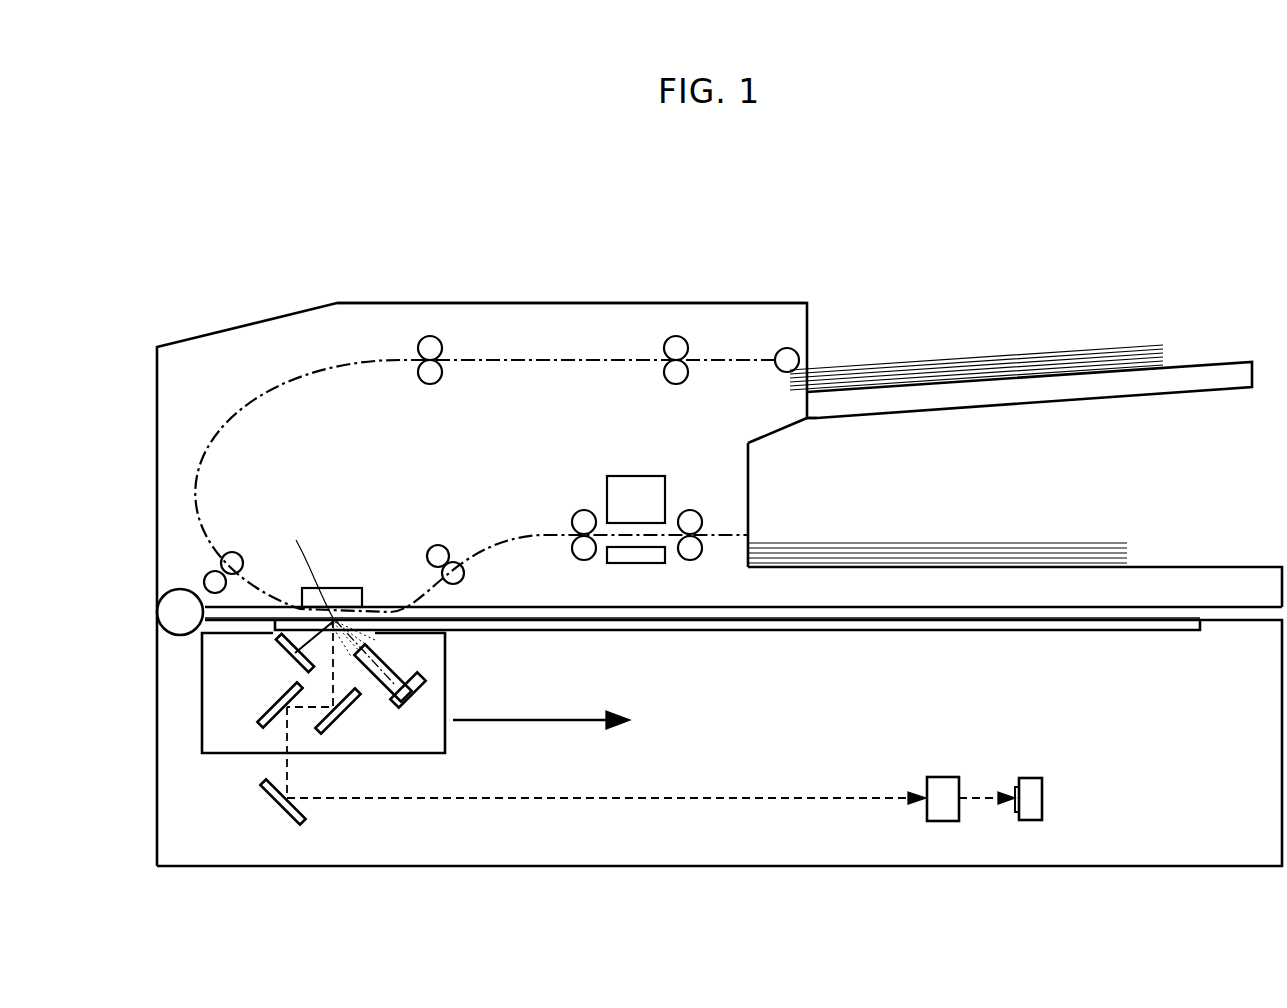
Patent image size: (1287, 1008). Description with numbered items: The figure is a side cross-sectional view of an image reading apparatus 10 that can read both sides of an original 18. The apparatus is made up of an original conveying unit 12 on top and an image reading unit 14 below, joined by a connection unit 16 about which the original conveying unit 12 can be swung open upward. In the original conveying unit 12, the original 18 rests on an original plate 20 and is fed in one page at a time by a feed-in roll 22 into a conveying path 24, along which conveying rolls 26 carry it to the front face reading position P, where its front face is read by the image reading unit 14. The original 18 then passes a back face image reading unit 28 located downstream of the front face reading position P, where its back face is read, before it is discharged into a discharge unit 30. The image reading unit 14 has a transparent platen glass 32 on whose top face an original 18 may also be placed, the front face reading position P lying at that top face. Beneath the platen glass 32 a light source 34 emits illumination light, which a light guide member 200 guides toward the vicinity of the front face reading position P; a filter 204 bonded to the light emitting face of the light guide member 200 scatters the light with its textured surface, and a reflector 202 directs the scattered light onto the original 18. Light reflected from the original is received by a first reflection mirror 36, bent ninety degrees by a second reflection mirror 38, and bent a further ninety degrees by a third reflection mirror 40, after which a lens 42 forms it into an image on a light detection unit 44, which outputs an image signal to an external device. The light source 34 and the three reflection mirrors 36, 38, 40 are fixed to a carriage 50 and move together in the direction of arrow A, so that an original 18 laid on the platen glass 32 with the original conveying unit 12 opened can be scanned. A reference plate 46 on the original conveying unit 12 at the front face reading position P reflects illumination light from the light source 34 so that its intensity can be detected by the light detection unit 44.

The image reading apparatus 10 is at (769, 257).
The original conveying unit 12 is at (468, 302).
The image reading unit 14 is at (156, 685).
The connection unit 16 is at (175, 593).
The original 18 is at (998, 345).
The original plate 20 is at (1203, 362).
The feed-in roll 22 is at (776, 350).
The conveying path 24 is at (575, 364).
The conveying rolls 26 is at (460, 366).
The back face image reading unit 28 is at (636, 471).
The discharge unit 30 is at (1194, 567).
The platen glass 32 is at (852, 632).
The light source 34 is at (422, 680).
The first reflection mirror 36 is at (345, 718).
The second reflection mirror 38 is at (265, 705).
The third reflection mirror 40 is at (270, 805).
The lens 42 is at (945, 776).
The light detection unit 44 is at (1031, 777).
The reference plate 46 is at (336, 587).
The carriage 50 is at (445, 753).
The light guide member 200 is at (368, 655).
The reflector 202 is at (282, 655).
The filter 204 is at (340, 618).
The front face reading position P is at (306, 566).
The arrow A is at (544, 720).